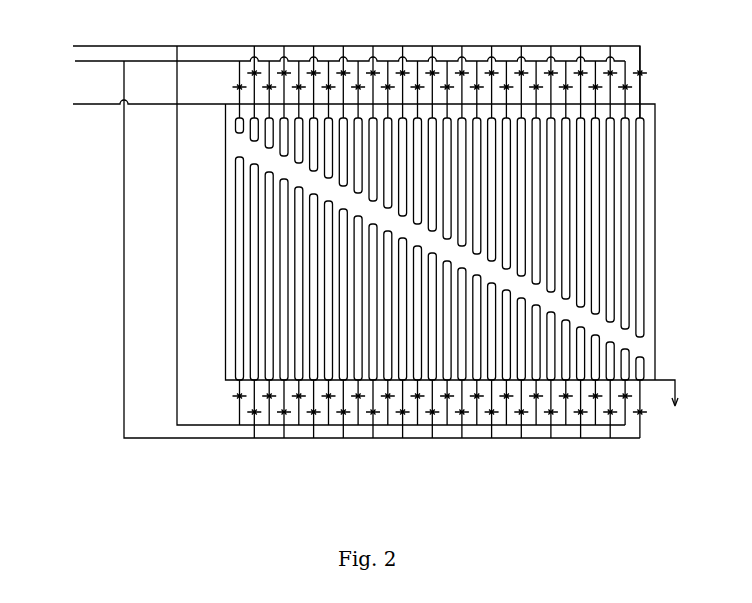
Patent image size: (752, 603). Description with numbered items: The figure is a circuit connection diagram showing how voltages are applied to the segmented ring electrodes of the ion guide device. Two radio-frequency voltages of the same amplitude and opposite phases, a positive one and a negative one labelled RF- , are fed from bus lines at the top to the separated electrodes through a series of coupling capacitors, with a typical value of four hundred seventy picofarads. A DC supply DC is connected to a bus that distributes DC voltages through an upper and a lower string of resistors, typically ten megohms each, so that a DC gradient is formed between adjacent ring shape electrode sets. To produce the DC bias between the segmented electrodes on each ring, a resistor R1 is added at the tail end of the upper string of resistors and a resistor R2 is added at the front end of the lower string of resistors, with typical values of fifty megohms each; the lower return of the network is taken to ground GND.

The resistor R1 is at (653, 94).
The resistor R2 is at (226, 396).
The radio-frequency voltage RF- is at (326, 60).
The DC voltage DC is at (342, 238).
The ground connection GND is at (677, 407).